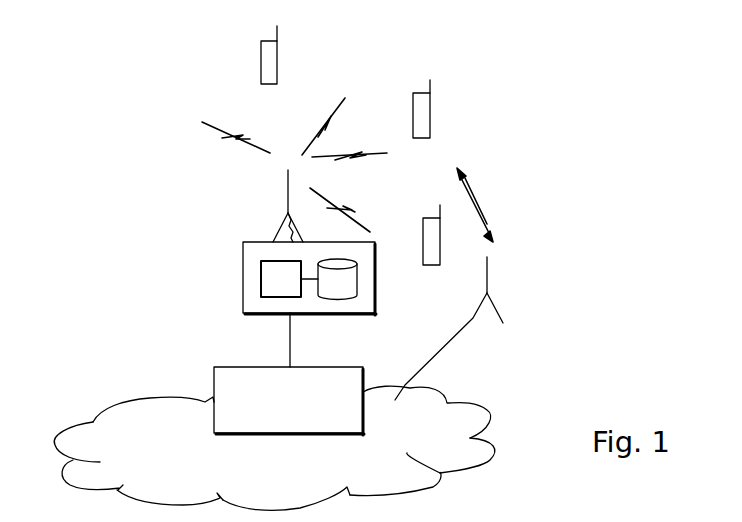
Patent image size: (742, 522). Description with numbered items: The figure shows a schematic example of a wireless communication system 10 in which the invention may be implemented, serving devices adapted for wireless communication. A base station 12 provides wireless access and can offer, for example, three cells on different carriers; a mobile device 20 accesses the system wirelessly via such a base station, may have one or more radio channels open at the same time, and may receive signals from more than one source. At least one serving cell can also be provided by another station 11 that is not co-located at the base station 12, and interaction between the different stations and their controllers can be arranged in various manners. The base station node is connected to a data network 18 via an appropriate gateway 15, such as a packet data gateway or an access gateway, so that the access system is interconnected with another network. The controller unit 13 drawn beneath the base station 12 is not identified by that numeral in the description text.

The communication system 10 is at (131, 119).
The second base station antenna 11 is at (493, 270).
The base station antenna 12 is at (283, 207).
The base station controller with processor and database 13 is at (243, 280).
The network gateway 15 is at (214, 384).
The network cloud 18 is at (120, 440).
The mobile terminal 20 is at (432, 118).